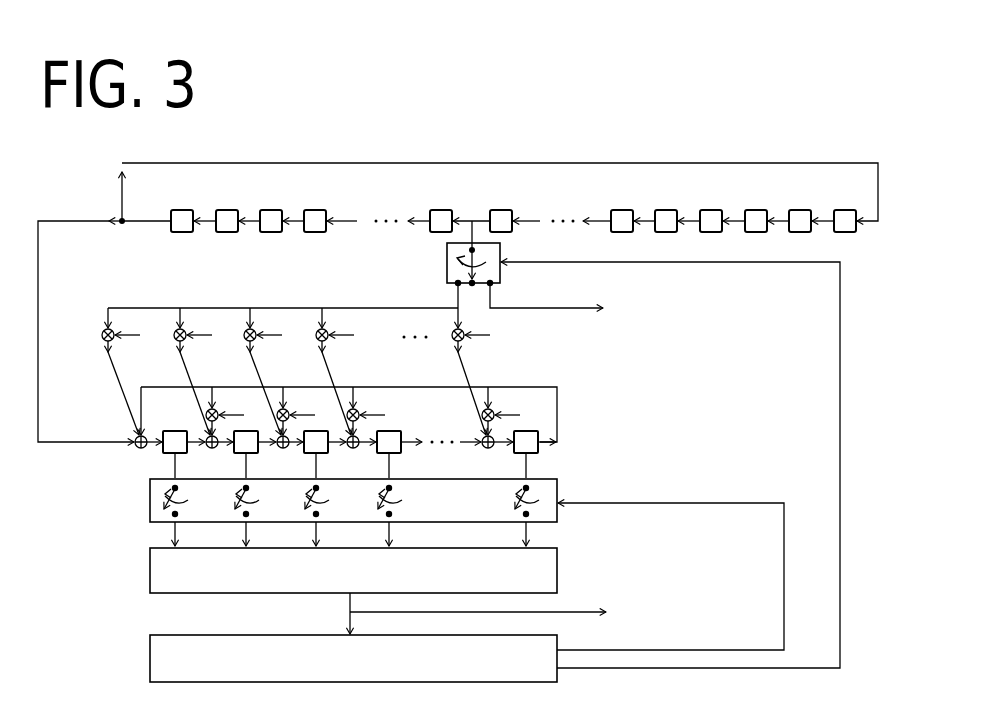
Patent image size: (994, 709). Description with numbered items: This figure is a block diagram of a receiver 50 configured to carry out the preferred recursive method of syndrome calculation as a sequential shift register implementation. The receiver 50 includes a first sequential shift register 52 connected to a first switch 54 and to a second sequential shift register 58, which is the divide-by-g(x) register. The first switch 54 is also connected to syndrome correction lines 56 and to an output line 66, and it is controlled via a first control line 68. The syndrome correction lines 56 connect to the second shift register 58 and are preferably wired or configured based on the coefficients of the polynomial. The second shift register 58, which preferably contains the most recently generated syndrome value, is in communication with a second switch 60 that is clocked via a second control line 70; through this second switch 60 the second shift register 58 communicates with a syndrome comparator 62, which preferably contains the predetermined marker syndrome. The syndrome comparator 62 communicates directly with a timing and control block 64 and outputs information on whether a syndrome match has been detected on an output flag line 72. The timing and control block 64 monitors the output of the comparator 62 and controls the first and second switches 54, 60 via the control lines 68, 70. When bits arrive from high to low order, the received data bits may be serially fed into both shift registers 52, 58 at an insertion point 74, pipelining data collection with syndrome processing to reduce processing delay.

The receiver 50 is at (188, 144).
The first sequential shift register 52 is at (868, 208).
The first switch 54 is at (500, 276).
The syndrome correction lines 56 is at (84, 323).
The second sequential shift register 58 is at (556, 431).
The second switch 60 is at (150, 500).
The syndrome comparator 62 is at (150, 562).
The timing and control block 64 is at (150, 652).
The output line 66 is at (572, 312).
The first control line 68 is at (840, 327).
The second control line 70 is at (784, 597).
The output flag line 72 is at (576, 611).
The insertion point 74 is at (122, 224).